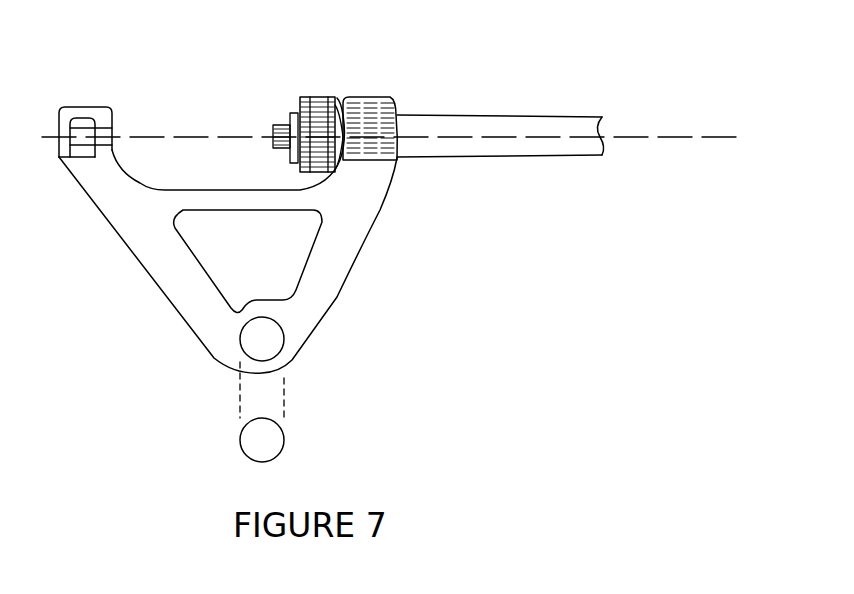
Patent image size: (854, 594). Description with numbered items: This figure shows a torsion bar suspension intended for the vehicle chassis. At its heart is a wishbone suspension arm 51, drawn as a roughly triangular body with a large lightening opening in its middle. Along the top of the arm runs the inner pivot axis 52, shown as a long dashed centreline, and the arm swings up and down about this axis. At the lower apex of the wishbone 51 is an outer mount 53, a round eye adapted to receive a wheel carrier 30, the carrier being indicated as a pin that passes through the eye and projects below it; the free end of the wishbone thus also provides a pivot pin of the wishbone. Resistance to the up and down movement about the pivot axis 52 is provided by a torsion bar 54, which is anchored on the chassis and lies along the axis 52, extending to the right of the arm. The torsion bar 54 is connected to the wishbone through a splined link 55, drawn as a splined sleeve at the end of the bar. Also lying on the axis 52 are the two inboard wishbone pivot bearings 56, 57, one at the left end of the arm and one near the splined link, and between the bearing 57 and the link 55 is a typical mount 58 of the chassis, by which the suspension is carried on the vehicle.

The wheel carrier 30 is at (243, 395).
The wishbone suspension arm 51 is at (323, 295).
The inner pivot axis 52 is at (647, 135).
The outer mount 53 is at (263, 352).
The torsion bar 54 is at (502, 145).
The splined link 55 is at (383, 127).
The inboard wishbone pivot bearing 56 is at (125, 129).
The inboard wishbone pivot bearing 57 is at (300, 100).
The chassis mount 58 is at (332, 100).